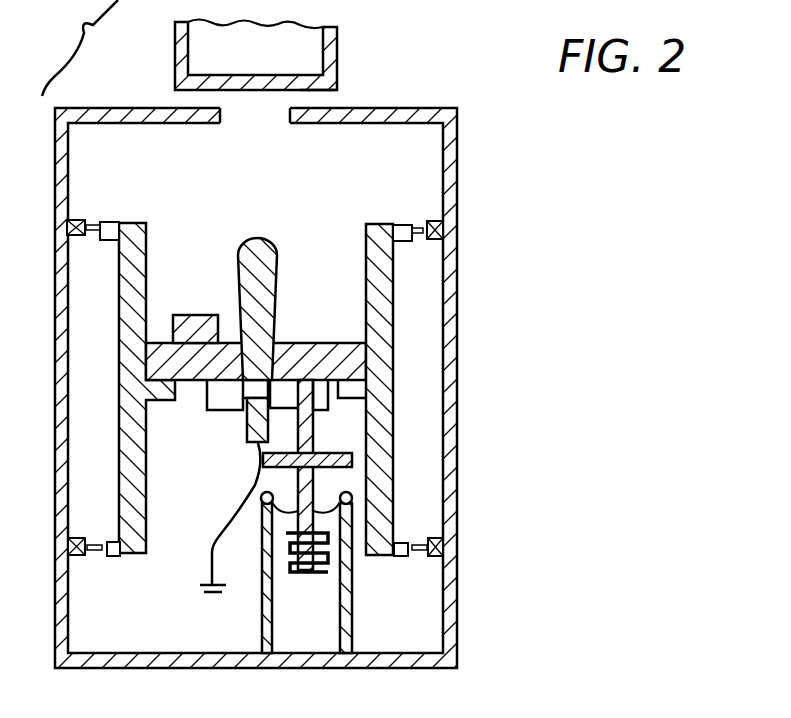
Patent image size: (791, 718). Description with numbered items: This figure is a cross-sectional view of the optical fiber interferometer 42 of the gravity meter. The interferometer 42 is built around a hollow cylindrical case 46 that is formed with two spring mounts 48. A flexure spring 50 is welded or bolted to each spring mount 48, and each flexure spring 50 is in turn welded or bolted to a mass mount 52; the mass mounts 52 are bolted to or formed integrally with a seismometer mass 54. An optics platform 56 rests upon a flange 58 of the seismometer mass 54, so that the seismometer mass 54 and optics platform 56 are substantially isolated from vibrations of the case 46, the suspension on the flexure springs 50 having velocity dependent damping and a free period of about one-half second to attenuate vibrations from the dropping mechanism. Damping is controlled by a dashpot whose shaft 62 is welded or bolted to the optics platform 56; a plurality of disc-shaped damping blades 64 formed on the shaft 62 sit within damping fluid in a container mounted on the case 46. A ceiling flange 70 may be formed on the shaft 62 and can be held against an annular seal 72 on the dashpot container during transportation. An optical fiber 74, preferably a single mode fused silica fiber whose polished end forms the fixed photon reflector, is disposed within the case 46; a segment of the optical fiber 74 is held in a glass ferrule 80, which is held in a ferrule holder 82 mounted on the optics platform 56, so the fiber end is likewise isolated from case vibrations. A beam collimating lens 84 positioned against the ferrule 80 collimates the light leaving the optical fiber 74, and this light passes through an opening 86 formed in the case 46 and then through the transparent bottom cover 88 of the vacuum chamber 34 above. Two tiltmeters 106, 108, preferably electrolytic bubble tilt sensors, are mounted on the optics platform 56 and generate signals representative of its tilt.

The vacuum chamber 34 is at (340, 43).
The interferometer 42 is at (428, 149).
The case 46 is at (458, 351).
The spring mounts 48 is at (437, 232).
The flexure springs 50 is at (413, 230).
The mass mounts 52 is at (403, 228).
The seismometer mass 54 is at (397, 355).
The optics platform 56 is at (168, 368).
The flange 58 is at (350, 398).
The shaft 62 is at (315, 483).
The damping blades 64 is at (322, 563).
The ceiling flange 70 is at (352, 458).
The annular seal 72 is at (352, 498).
The optical fiber 74 is at (208, 578).
The glass ferrule 80 is at (248, 440).
The ferrule holder 82 is at (280, 326).
The beam collimating lens 84 is at (258, 238).
The opening 86 is at (250, 125).
The transparent bottom cover 88 is at (305, 89).
The tiltmeter 106 is at (184, 313).
The tiltmeter 108 is at (208, 411).